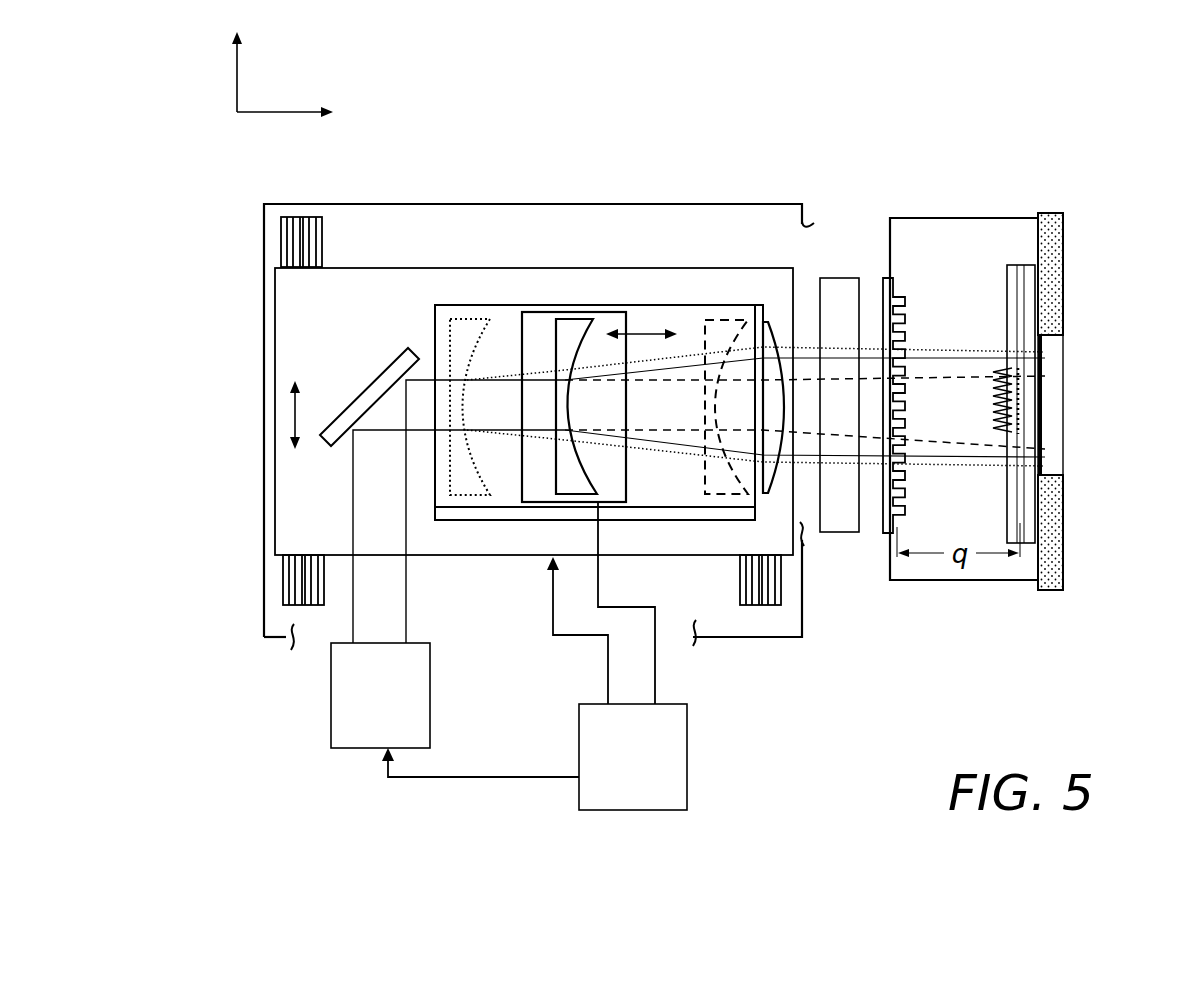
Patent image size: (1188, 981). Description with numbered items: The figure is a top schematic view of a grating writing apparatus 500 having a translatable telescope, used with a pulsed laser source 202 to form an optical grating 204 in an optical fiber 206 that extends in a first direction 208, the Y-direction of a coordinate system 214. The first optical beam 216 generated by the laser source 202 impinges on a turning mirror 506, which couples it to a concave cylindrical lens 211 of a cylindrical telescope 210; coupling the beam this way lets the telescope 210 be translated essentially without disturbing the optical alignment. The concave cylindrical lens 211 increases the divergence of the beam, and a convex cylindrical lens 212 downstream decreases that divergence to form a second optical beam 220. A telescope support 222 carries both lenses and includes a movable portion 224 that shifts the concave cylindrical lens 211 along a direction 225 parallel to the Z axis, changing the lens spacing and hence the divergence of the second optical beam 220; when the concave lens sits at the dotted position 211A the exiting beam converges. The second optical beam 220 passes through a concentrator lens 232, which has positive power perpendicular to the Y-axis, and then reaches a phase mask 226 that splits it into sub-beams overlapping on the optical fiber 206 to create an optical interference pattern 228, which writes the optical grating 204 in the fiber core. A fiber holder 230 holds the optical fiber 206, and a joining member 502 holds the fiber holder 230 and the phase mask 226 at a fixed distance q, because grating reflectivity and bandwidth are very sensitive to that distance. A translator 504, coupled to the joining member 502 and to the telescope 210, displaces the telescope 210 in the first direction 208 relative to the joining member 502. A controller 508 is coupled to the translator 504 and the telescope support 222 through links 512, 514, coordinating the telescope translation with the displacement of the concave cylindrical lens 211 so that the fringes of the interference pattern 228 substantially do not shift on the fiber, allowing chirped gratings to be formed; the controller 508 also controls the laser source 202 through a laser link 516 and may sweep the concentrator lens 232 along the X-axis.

The apparatus 500 is at (848, 113).
The joining member 502 is at (963, 583).
The translator 504 is at (266, 240).
The turning mirror 506 is at (411, 352).
The controller 508 is at (614, 772).
The link 512 is at (607, 681).
The link 514 is at (656, 686).
The laser link 516 is at (508, 787).
The pulsed laser source 202 is at (364, 717).
The optical grating 204 is at (1036, 395).
The optical fiber 206 is at (1006, 304).
The first direction 208 is at (300, 398).
The cylindrical telescope 210 is at (503, 648).
The concave cylindrical lens 211 is at (566, 305).
The position of concave cylindrical lens 211A is at (483, 310).
The convex cylindrical lens 212 is at (772, 320).
The coordinate system 214 is at (216, 80).
The first optical beam 216 is at (380, 582).
The second optical beam 220 is at (869, 328).
The telescope support 222 is at (652, 318).
The movable portion 224 is at (568, 318).
The direction 225 is at (662, 332).
The phase mask 226 is at (904, 302).
The optical interference pattern 228 is at (986, 404).
The fiber holder 230 is at (1065, 218).
The concentrator lens 232 is at (840, 318).